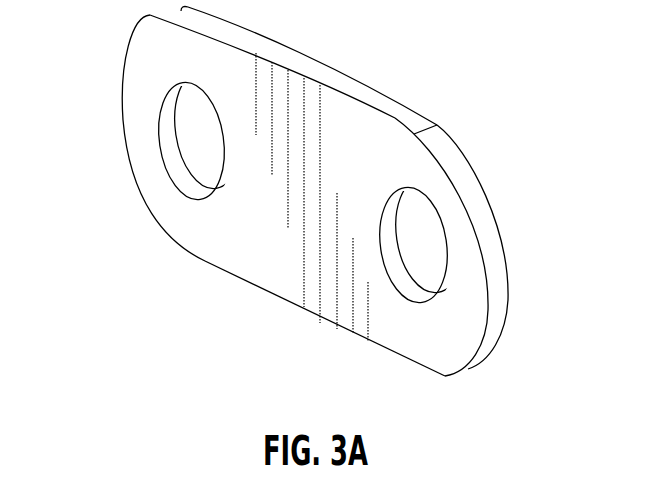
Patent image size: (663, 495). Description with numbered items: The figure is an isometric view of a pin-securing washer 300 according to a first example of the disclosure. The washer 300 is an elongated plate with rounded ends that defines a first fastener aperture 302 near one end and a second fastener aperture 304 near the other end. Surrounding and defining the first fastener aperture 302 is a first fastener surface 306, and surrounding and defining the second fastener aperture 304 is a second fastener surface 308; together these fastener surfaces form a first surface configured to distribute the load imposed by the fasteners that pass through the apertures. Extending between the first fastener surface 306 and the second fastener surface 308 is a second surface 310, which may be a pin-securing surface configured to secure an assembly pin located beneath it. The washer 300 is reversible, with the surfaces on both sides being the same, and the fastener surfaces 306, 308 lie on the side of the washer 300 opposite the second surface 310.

The pin-securing washer 300 is at (365, 101).
The first fastener aperture 302 is at (205, 134).
The second fastener aperture 304 is at (433, 250).
The first fastener surface 306 is at (141, 84).
The second fastener surface 308 is at (435, 189).
The second surface 310 is at (279, 280).